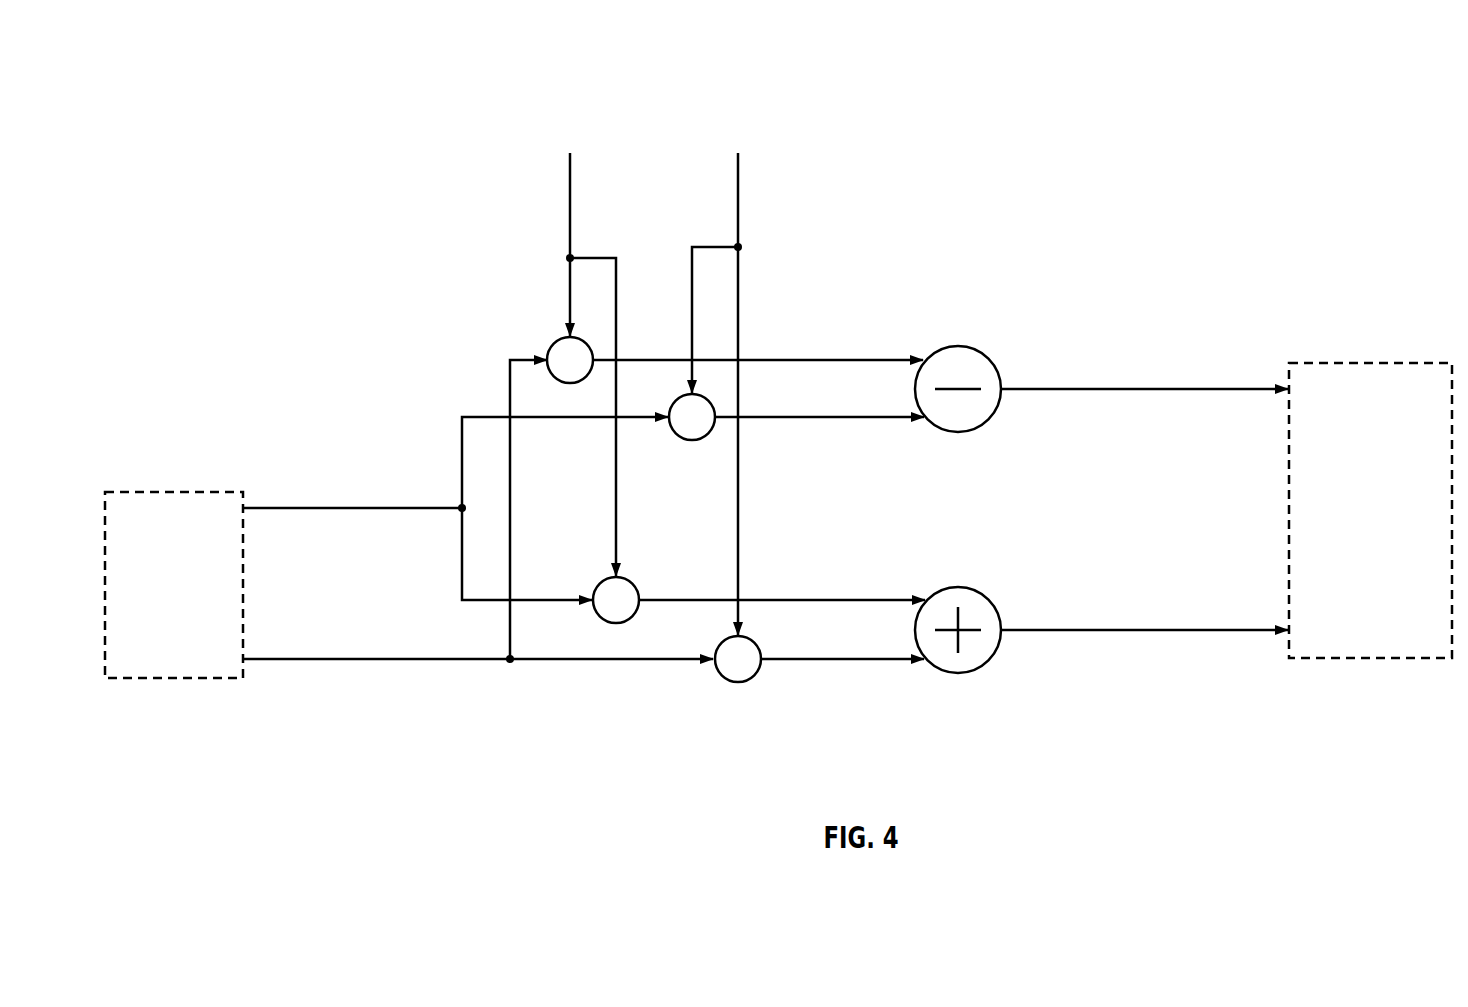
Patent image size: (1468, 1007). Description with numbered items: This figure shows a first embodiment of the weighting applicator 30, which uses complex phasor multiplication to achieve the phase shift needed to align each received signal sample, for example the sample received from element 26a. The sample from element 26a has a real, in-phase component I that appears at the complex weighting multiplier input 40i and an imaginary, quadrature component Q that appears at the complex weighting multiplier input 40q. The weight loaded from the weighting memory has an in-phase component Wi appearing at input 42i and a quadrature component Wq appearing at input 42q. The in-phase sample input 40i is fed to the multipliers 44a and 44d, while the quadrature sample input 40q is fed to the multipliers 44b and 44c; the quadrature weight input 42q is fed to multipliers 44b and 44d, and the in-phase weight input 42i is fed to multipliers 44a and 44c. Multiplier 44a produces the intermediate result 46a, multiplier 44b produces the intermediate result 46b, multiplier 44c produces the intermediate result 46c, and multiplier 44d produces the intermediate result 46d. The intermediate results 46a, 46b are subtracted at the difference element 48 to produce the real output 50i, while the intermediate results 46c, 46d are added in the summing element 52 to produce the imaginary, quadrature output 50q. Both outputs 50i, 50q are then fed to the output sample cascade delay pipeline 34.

The weighting applicator 30 is at (320, 72).
The element 26a is at (170, 492).
The complex weighting multiplier input 40q is at (338, 510).
The complex weighting multiplier input 40i is at (338, 661).
The complex weighting multiplier input 42i is at (571, 203).
The complex weighting multiplier input 42q is at (738, 203).
The multiplier 44a is at (557, 341).
The multiplier 44b is at (692, 441).
The multiplier 44c is at (609, 577).
The multiplier 44d is at (738, 683).
The intermediate result 46a is at (763, 358).
The intermediate result 46b is at (763, 420).
The intermediate result 46c is at (765, 600).
The intermediate result 46d is at (780, 662).
The difference element 48 is at (958, 347).
The summing element 52 is at (958, 587).
The real output 50i is at (1138, 391).
The quadrature output 50q is at (1138, 632).
The output sample cascade delay pipeline 34 is at (1393, 362).